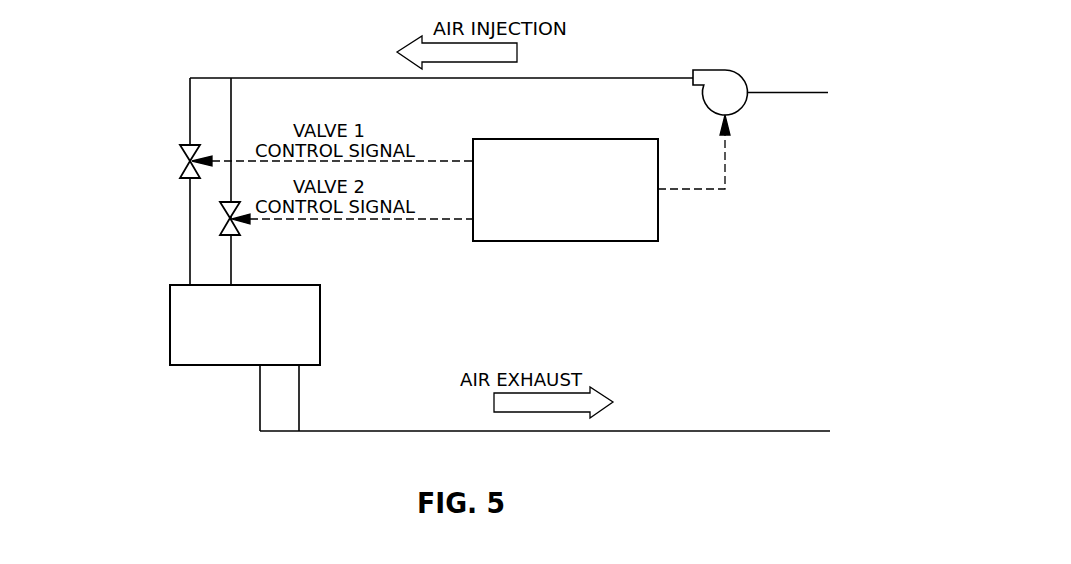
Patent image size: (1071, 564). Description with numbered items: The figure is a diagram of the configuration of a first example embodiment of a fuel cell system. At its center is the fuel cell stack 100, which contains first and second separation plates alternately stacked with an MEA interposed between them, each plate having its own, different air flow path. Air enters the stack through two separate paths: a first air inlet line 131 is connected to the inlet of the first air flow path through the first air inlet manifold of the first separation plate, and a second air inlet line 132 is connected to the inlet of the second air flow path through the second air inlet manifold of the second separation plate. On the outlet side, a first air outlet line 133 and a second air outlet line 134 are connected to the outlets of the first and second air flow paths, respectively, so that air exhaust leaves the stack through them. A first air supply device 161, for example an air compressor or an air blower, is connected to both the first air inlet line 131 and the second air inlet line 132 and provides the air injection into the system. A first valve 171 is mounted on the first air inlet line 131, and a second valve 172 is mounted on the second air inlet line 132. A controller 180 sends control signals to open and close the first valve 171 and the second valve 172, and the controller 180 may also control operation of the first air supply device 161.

The fuel cell stack 100 is at (170, 323).
The first air inlet line 131 is at (190, 262).
The second air inlet line 132 is at (231, 277).
The first air outlet line 133 is at (260, 397).
The second air outlet line 134 is at (300, 398).
The first air supply device 161 is at (743, 110).
The first valve 171 is at (183, 143).
The second valve 172 is at (228, 219).
The controller 180 is at (548, 242).